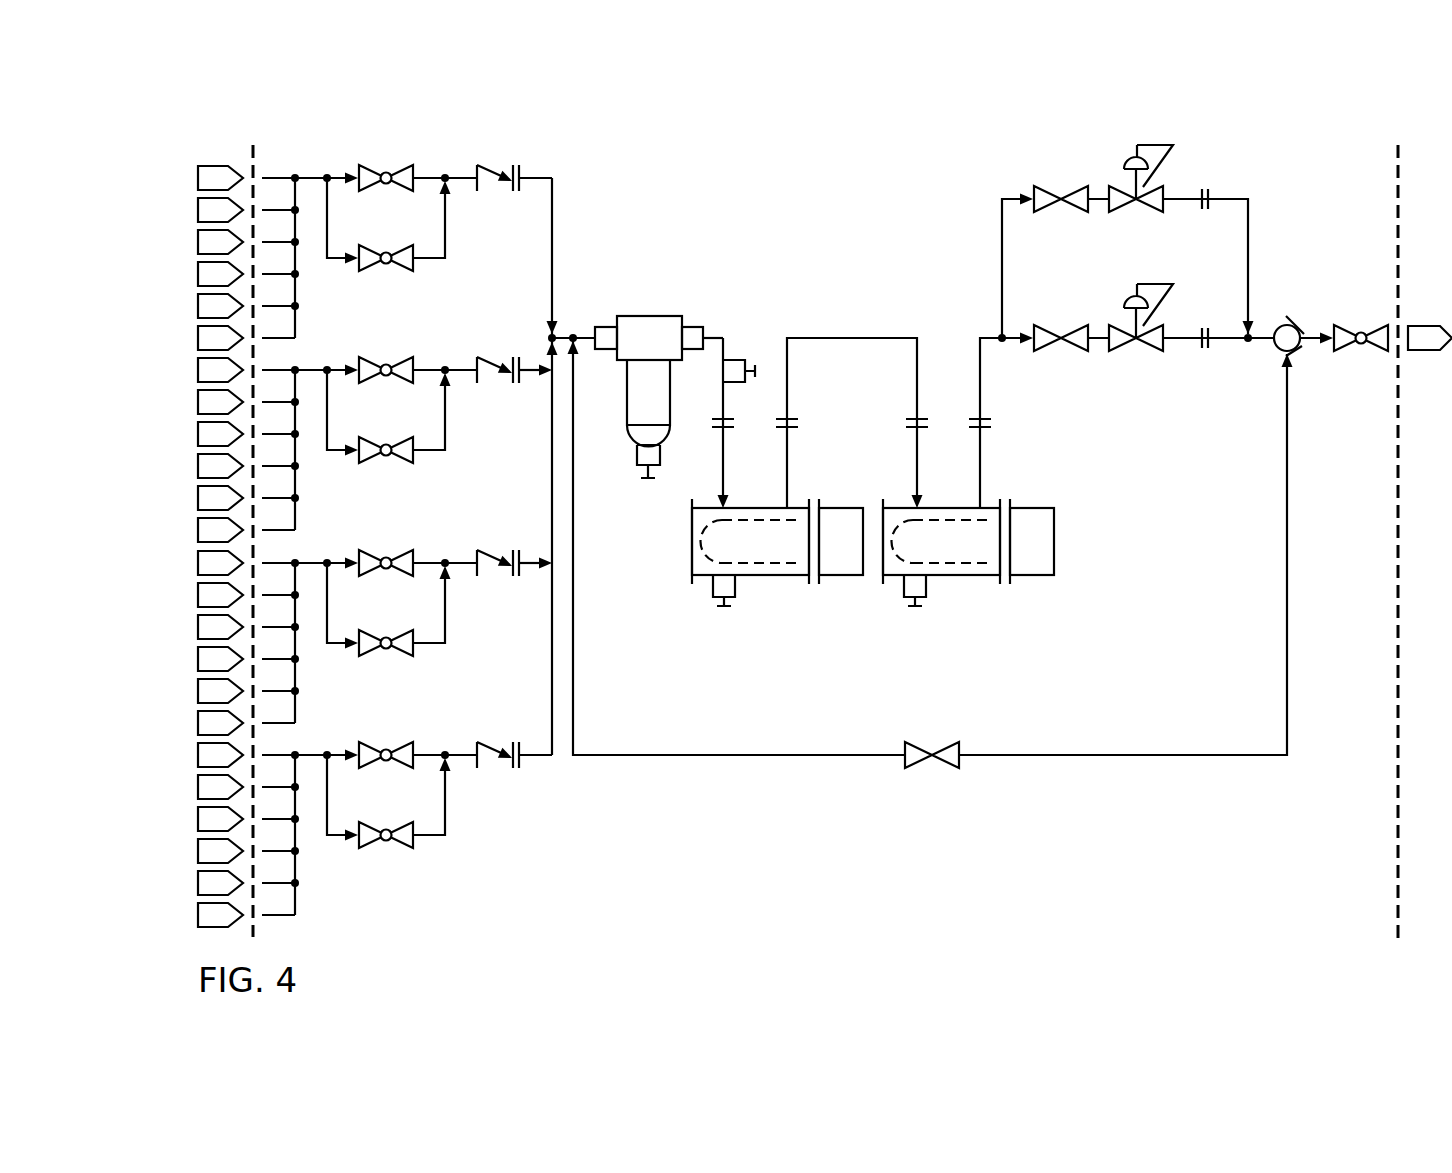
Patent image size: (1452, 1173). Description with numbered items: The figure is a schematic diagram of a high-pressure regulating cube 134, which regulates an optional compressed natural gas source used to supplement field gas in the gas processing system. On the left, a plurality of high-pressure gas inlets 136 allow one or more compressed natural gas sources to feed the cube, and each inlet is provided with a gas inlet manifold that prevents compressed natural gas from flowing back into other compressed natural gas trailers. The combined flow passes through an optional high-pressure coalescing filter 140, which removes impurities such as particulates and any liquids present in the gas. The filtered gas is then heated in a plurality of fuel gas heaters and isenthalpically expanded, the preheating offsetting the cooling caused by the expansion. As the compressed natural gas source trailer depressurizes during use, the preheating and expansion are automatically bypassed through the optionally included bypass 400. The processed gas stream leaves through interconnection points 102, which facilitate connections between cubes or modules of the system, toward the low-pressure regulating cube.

The interconnection points 102 is at (1346, 322).
The high-pressure gas inlets 136 is at (197, 175).
The high-pressure coalescing filter 140 is at (643, 316).
The bypass 400 is at (1127, 758).
The high-pressure regulating cube 134 is at (968, 164).